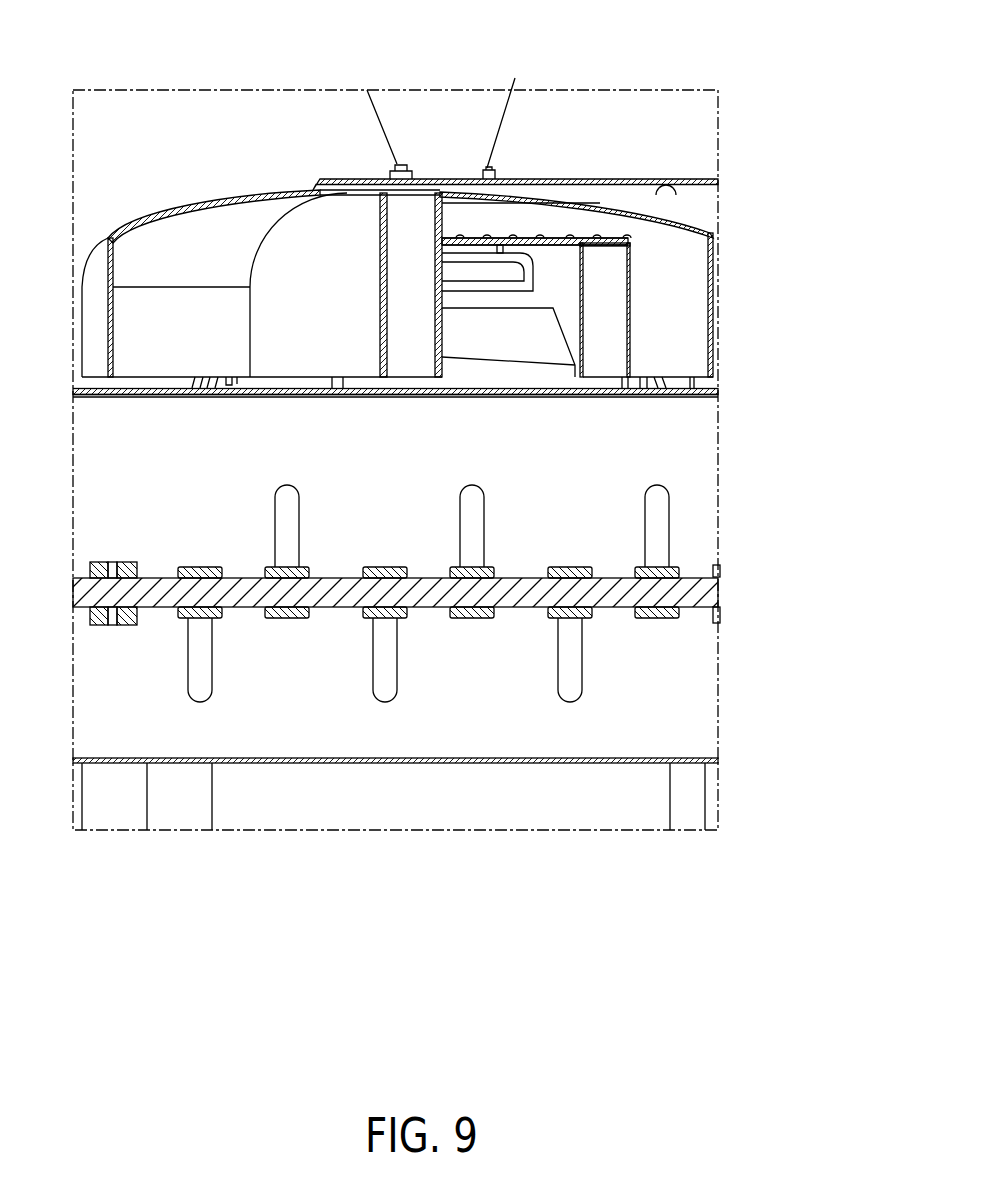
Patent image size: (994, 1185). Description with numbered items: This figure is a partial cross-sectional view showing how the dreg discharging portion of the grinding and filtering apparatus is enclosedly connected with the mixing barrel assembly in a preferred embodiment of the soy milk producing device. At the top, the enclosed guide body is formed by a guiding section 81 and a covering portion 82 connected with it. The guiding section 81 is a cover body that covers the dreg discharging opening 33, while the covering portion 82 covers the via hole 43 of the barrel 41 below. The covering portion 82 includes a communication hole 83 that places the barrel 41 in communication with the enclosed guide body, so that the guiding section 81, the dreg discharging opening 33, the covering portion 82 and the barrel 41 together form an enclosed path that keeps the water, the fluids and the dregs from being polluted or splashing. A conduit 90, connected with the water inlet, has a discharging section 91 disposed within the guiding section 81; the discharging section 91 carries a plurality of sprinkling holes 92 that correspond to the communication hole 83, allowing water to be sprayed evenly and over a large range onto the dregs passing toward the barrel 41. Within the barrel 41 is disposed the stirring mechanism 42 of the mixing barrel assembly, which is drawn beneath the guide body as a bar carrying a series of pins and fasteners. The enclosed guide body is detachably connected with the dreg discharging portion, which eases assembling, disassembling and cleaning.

The guiding section 81 is at (610, 183).
The conduit 90 is at (594, 221).
The discharging section 91 is at (623, 220).
The sprinkling hole 92 is at (633, 238).
The dreg discharging opening 33 is at (490, 268).
The covering portion 82 is at (712, 388).
The via hole 43 is at (675, 397).
The communication hole 83 is at (517, 393).
The stirring mechanism 42 is at (690, 587).
The barrel 41 is at (647, 763).